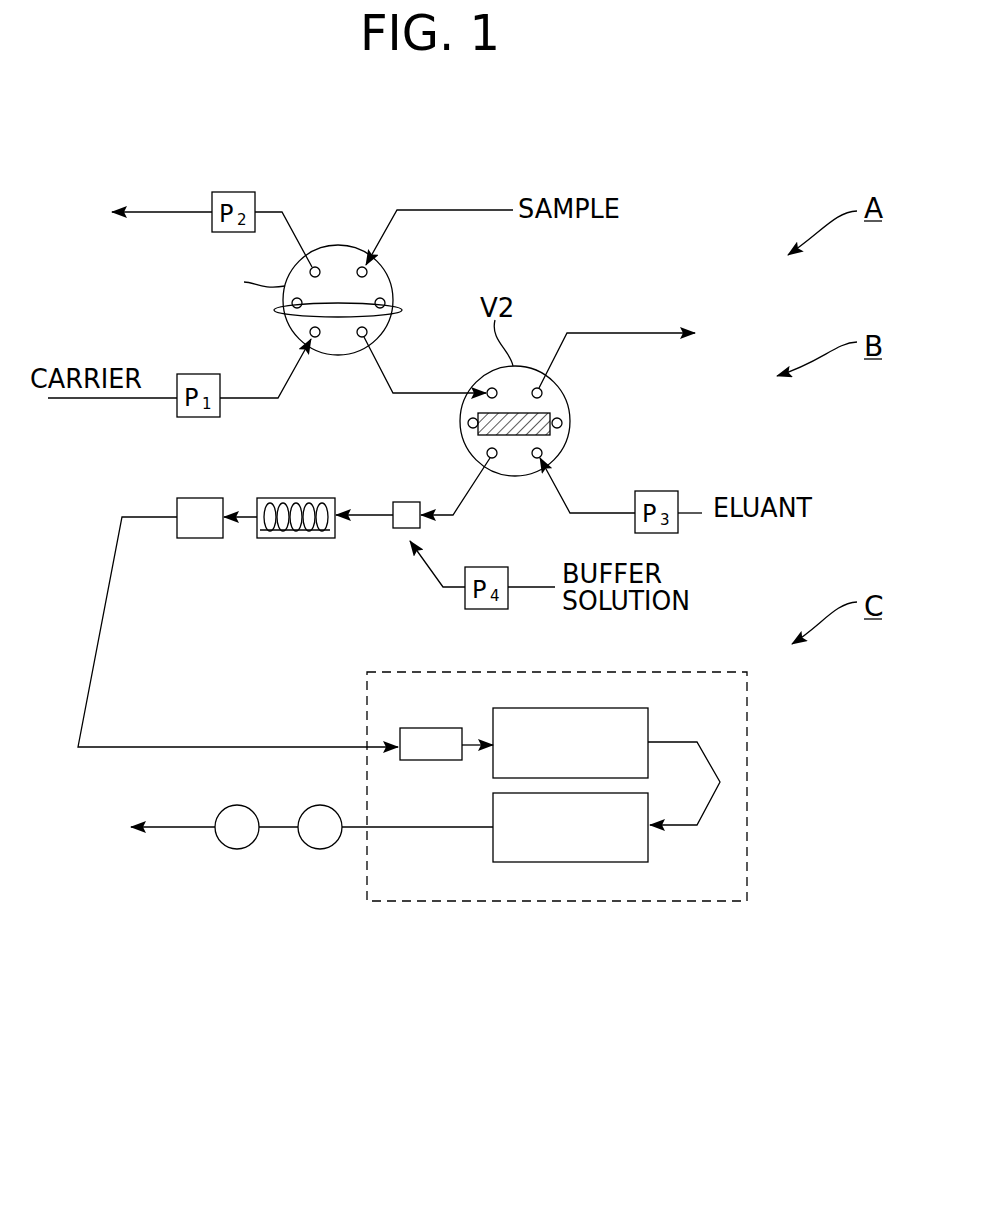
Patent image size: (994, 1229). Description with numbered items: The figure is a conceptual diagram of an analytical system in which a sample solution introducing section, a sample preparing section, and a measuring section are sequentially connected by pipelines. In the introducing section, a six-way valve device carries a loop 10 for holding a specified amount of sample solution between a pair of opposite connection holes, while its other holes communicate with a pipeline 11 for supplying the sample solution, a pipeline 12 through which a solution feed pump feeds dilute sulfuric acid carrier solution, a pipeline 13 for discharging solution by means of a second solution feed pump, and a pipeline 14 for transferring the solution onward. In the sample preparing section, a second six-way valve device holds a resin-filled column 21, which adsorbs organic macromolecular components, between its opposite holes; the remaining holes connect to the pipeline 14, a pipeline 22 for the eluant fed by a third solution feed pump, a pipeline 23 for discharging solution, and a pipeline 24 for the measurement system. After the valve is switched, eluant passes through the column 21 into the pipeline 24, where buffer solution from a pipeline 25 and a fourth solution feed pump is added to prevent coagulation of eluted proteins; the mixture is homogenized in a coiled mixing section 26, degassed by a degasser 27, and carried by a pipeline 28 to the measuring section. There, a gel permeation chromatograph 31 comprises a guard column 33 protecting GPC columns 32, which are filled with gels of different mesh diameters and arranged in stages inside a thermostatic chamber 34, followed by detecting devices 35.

The loop 10 is at (402, 310).
The pipeline for supplying the sample solution 11 is at (466, 210).
The pipeline for introducing the carrier solution 12 is at (253, 400).
The pipeline for discharging the solution 13 is at (158, 211).
The pipeline for transferring the solution to the measuring section 14 is at (416, 396).
The resin-filled column 21 is at (542, 412).
The pipeline for the eluant 22 is at (600, 513).
The pipeline for discharging the solution 23 is at (630, 333).
The pipeline for the measurement system 24 is at (466, 494).
The pipeline for the buffer solution 25 is at (432, 575).
The mixing section 26 is at (305, 540).
The degasser 27 is at (200, 540).
The pipeline for the measurement system 28 is at (248, 745).
The gel permeation chromatograph 31 is at (483, 950).
The GPC columns 32 is at (648, 712).
The guard column 33 is at (432, 728).
The thermostatic chamber 34 is at (747, 780).
The detecting devices 35 is at (320, 850).